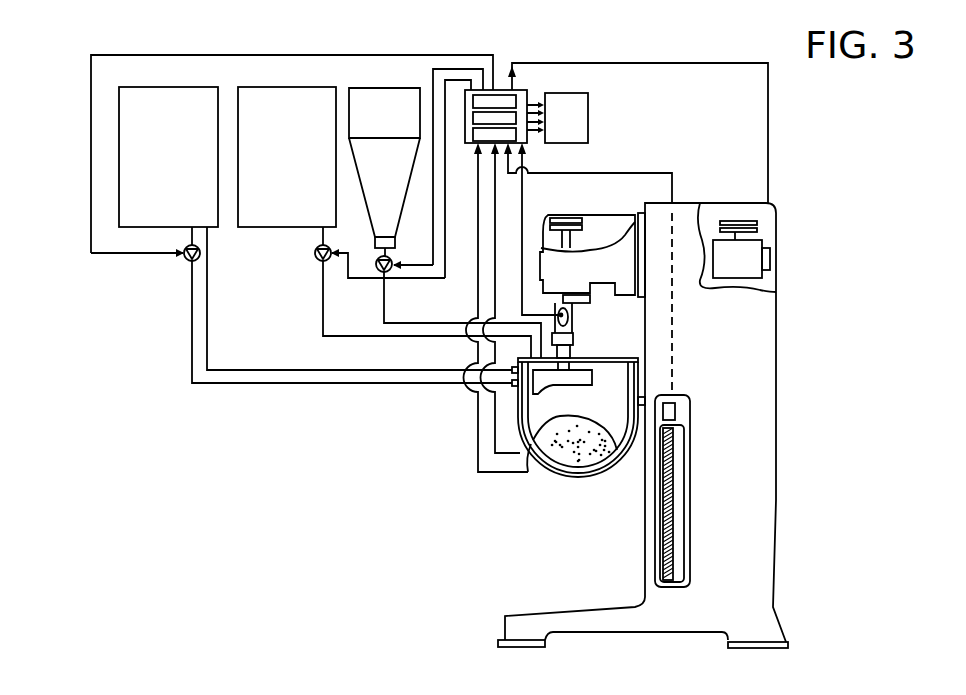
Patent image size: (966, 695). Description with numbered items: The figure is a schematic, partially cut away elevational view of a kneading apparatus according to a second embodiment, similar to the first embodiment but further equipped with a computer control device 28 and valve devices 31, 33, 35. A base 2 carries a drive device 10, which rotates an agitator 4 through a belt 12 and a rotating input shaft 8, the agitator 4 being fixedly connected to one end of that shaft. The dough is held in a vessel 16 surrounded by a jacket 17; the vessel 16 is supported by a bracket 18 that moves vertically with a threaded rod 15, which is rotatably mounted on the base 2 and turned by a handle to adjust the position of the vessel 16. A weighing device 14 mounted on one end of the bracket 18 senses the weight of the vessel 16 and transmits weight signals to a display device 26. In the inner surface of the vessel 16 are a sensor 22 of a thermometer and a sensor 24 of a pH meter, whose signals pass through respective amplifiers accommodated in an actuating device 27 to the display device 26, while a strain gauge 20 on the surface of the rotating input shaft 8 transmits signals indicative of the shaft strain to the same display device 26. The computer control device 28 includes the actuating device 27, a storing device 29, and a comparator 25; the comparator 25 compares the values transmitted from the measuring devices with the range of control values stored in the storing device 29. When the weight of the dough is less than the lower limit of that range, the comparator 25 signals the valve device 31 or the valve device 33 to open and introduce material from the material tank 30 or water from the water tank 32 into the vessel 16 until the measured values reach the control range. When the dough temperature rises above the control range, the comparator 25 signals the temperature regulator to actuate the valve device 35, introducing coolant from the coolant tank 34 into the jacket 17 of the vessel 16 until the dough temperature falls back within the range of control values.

The base 2 is at (777, 462).
The agitator 4 is at (564, 450).
The rotating input shaft 8 is at (543, 235).
The drive device 10 is at (755, 255).
The belt 12 is at (600, 217).
The weighing device 14 is at (677, 408).
The threaded rod 15 is at (672, 587).
The vessel 16 is at (597, 473).
The jacket 17 is at (612, 463).
The bracket 18 is at (640, 423).
The strain gauge 20 is at (570, 317).
The sensor of a thermometer 22 is at (550, 463).
The sensor of a pH meter 24 is at (531, 444).
The comparator 25 is at (521, 90).
The display device 26 is at (590, 113).
The actuating device 27 is at (520, 136).
The computer control device 28 is at (500, 88).
The storing device 29 is at (518, 103).
The material tank 30 is at (386, 88).
The valve device 31 is at (378, 268).
The water tank 32 is at (275, 87).
The valve device 33 is at (314, 257).
The coolant tank 34 is at (157, 87).
The valve device 35 is at (188, 262).